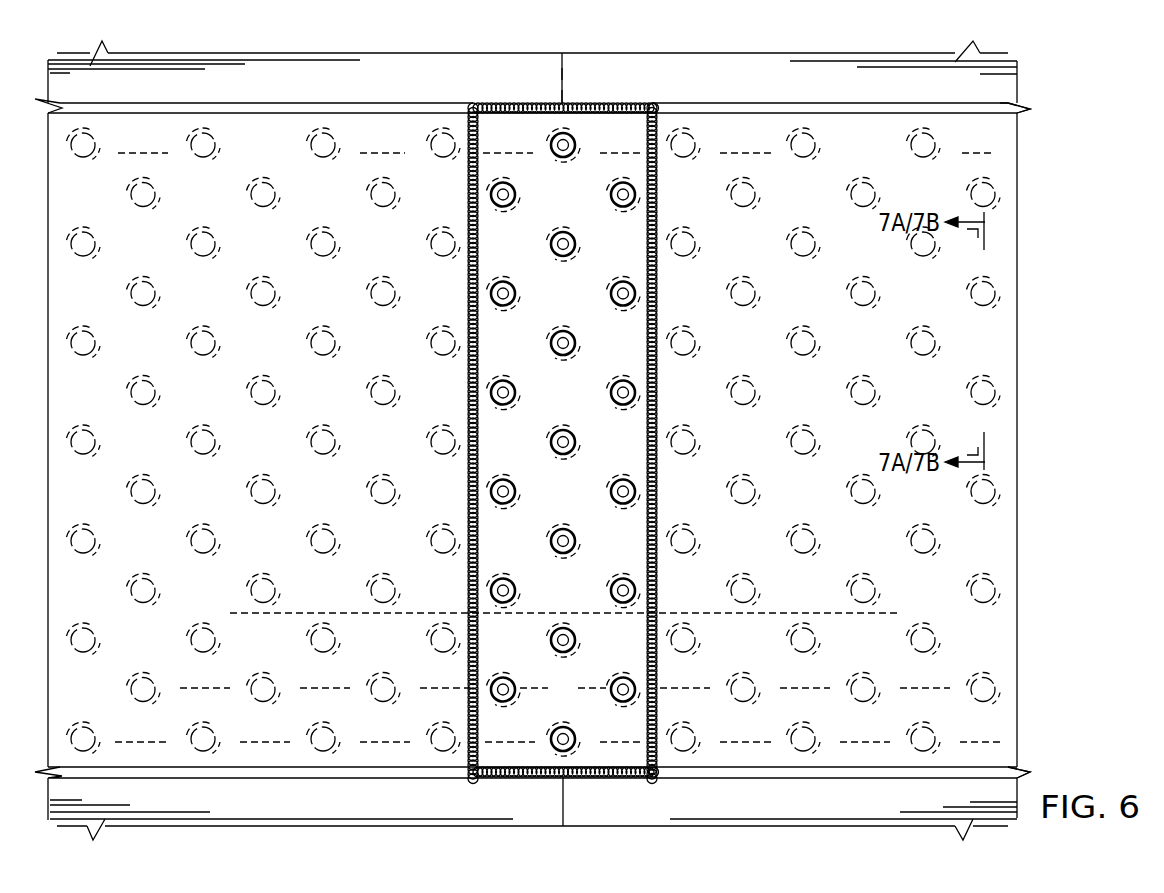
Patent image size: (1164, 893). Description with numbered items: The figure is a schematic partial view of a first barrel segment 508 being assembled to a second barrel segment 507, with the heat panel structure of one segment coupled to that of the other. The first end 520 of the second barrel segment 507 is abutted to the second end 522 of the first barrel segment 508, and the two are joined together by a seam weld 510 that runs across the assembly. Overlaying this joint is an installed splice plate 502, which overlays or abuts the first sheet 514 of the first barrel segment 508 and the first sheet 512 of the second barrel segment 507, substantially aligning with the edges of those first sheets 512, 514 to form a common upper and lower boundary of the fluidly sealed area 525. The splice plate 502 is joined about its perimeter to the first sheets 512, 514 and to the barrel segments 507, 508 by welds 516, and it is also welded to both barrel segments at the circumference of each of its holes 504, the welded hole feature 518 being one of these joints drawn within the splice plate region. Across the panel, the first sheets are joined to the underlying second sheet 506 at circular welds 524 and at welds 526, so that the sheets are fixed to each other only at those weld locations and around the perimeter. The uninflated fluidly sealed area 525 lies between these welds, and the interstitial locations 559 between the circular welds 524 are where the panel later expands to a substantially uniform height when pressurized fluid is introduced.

The splice plate 502 is at (612, 757).
The holes 504 is at (560, 745).
The second sheet 506 is at (856, 92).
The second barrel segment 507 is at (665, 62).
The first barrel segment 508 is at (276, 92).
The seam weld 510 is at (566, 62).
The first sheet of the second barrel segment 512 is at (737, 122).
The first sheet of the first barrel segment 514 is at (388, 122).
The welds 516 is at (650, 345).
The welded fastener 518 is at (564, 240).
The first end of the second barrel segment 520 is at (561, 77).
The second end of the first barrel segment 522 is at (562, 95).
The circular welds 524 is at (983, 290).
The fluidly sealed area 525 is at (950, 314).
The welds 526 is at (975, 108).
The interstitial locations 559 is at (983, 543).